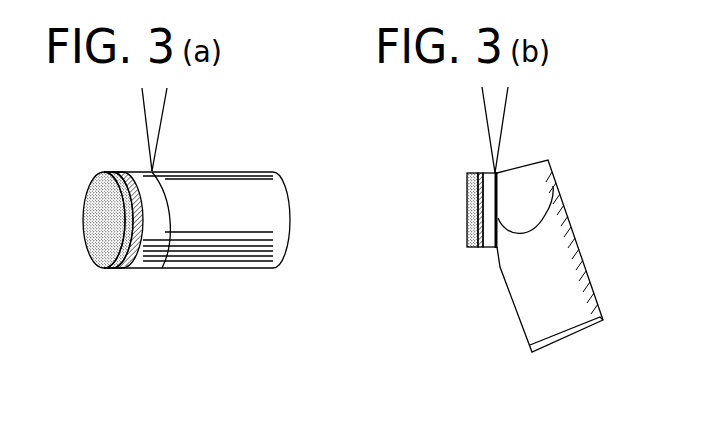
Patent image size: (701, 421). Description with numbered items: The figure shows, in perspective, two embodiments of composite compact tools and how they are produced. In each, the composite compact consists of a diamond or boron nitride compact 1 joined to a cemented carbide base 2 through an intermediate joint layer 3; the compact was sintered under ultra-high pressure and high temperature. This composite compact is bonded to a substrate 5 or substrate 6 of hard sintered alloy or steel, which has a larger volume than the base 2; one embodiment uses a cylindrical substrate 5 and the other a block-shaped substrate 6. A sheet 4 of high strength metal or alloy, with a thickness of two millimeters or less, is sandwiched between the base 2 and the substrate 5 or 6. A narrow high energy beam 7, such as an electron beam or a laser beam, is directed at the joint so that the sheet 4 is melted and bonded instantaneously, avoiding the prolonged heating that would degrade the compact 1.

In FIG. 3A, the diamond or boron nitride compact 1 is at (103, 260).
In FIG. 3B, the diamond or boron nitride compact 1 is at (465, 202).
In FIG. 3A, the base 2 is at (145, 270).
In FIG. 3B, the base 2 is at (483, 249).
In FIG. 3A, the intermediate joint layer 3 is at (128, 268).
In FIG. 3B, the intermediate joint layer 3 is at (478, 172).
In FIG. 3A, the sheet 4 is at (168, 198).
In FIG. 3B, the sheet 4 is at (498, 187).
In FIG. 3A, the substrate 5 is at (242, 182).
In FIG. 3B, the substrate 6 is at (585, 263).
In FIG. 3A, the high energy beam 7 is at (157, 105).
In FIG. 3B, the high energy beam 7 is at (500, 105).